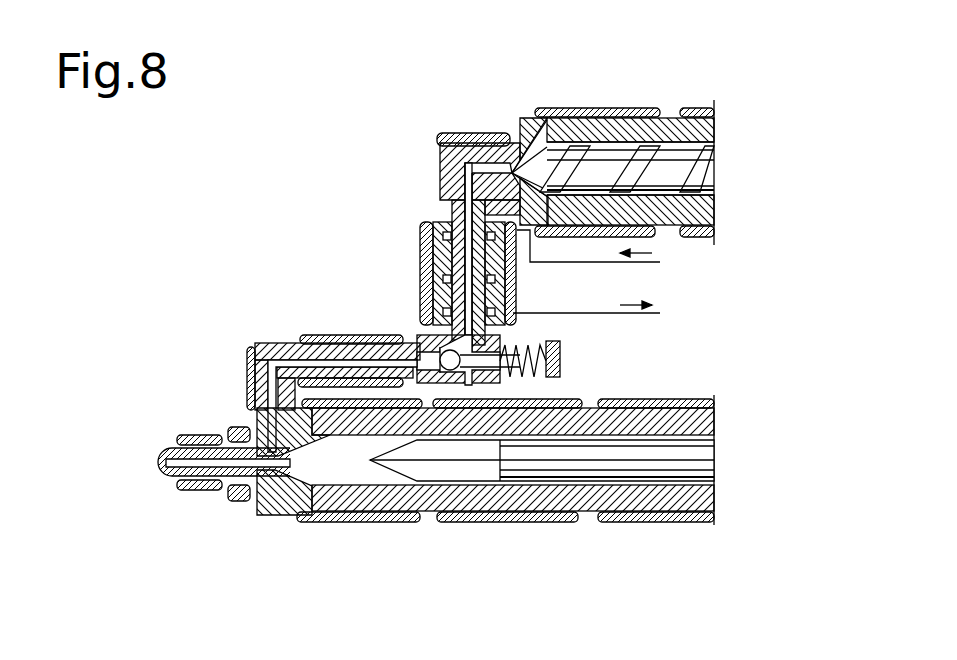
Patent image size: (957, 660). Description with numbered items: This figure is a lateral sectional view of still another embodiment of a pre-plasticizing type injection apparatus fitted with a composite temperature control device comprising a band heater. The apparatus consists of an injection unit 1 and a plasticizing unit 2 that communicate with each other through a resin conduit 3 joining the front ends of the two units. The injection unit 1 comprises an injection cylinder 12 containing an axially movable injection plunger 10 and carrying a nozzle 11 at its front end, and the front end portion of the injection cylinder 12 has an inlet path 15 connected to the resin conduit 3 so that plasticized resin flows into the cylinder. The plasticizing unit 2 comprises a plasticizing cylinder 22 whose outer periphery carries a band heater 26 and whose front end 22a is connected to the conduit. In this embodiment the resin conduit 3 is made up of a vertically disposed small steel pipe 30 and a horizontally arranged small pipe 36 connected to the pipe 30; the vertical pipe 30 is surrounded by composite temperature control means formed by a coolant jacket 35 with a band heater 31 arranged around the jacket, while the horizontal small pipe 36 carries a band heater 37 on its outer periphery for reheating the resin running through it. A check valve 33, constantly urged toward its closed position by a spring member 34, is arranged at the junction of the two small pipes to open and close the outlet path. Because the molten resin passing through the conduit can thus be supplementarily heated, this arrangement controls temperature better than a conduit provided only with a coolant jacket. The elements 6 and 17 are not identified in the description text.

The injection unit 1 is at (333, 523).
The plasticizing unit 2 is at (545, 118).
The resin conduit 3 is at (515, 290).
The optical fiber 6 is at (638, 157).
The injection plunger 10 is at (520, 463).
The nozzle 11 is at (180, 480).
The injection cylinder 12 is at (400, 522).
The inlet path 15 is at (258, 396).
The lower plate 17 is at (583, 522).
The plasticizing cylinder 22 is at (575, 118).
The front end of plasticizing cylinder 22a is at (452, 133).
The band heater 26 is at (692, 108).
The small steel pipe 30 is at (440, 203).
The band heater 31 is at (422, 283).
The check valve 33 is at (420, 350).
The spring member 34 is at (525, 356).
The coolant jacket 35 is at (422, 240).
The horizontal small pipe 36 is at (264, 344).
The band heater 37 is at (326, 338).